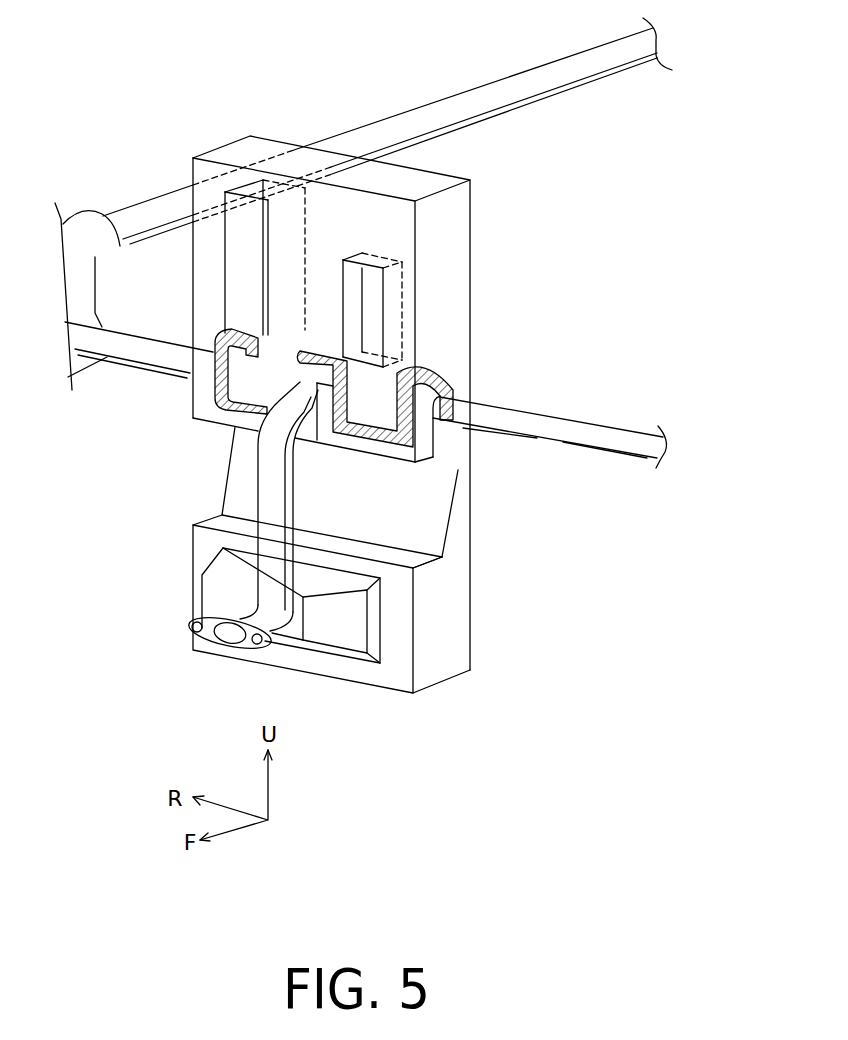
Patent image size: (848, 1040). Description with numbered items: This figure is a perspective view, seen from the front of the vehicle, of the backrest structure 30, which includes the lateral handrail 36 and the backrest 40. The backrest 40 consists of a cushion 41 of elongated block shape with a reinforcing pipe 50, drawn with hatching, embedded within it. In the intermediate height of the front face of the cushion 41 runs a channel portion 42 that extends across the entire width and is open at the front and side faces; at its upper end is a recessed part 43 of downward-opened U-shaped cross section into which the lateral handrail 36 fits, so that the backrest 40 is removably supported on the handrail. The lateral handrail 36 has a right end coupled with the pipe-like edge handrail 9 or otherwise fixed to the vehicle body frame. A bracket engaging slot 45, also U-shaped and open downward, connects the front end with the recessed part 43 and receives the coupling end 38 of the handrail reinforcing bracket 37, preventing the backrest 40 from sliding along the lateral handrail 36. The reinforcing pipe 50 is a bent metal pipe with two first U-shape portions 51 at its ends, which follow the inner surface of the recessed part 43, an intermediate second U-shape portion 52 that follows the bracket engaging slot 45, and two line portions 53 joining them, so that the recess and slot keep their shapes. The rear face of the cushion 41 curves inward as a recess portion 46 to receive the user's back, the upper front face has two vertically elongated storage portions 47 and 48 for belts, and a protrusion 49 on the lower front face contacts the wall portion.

The edge handrail 9 is at (468, 102).
The backrest structure 30 is at (482, 217).
The lateral handrail 36 is at (610, 428).
The handrail reinforcing bracket 37 is at (270, 487).
The coupling end 38 is at (292, 400).
The backrest 40 is at (455, 291).
The cushion 41 is at (446, 632).
The channel portion 42 is at (417, 498).
The recessed part 43 is at (438, 412).
The bracket engaging slot 45 is at (307, 443).
The recess portion 46 is at (372, 172).
The storage portion 47 is at (245, 252).
The storage portion 48 is at (372, 298).
The protrusion 49 is at (340, 630).
The reinforcing pipe 50 is at (433, 362).
The first U-shape portion 51 is at (216, 410).
The second U-shape portion 52 is at (308, 346).
The line portion 53 is at (240, 415).